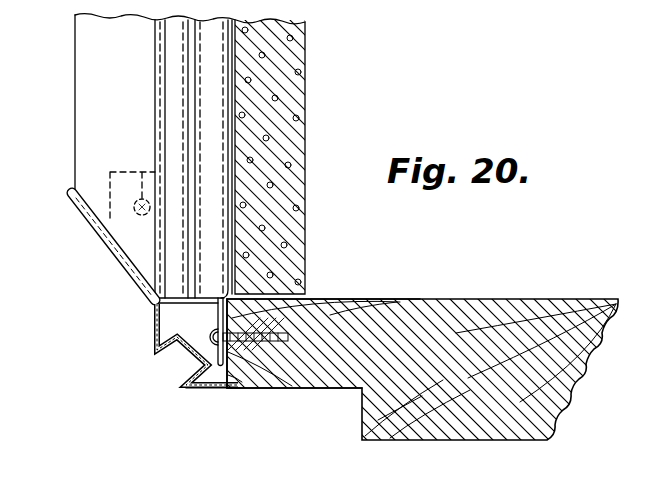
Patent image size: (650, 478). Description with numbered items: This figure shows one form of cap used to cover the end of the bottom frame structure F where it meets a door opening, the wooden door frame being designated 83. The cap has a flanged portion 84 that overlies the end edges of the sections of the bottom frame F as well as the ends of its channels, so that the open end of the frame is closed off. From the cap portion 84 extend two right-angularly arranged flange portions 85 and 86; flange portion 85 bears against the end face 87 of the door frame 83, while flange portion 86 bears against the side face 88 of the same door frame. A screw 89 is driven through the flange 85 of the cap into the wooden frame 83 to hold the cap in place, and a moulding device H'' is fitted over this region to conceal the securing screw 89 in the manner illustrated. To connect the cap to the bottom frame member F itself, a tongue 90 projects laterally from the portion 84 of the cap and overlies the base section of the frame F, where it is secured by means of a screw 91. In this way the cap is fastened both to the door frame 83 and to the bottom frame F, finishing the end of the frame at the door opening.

The bottom frame structure F is at (71, 120).
The moulding device H'' is at (171, 344).
The door frame 83 is at (430, 302).
The flanged portion 84 is at (87, 232).
The flange portion 85 is at (302, 388).
The flange portion 86 is at (253, 293).
The end face 87 is at (242, 388).
The side face 88 is at (330, 299).
The screw 89 is at (212, 338).
The tongue 90 is at (110, 186).
The screw 91 is at (142, 170).